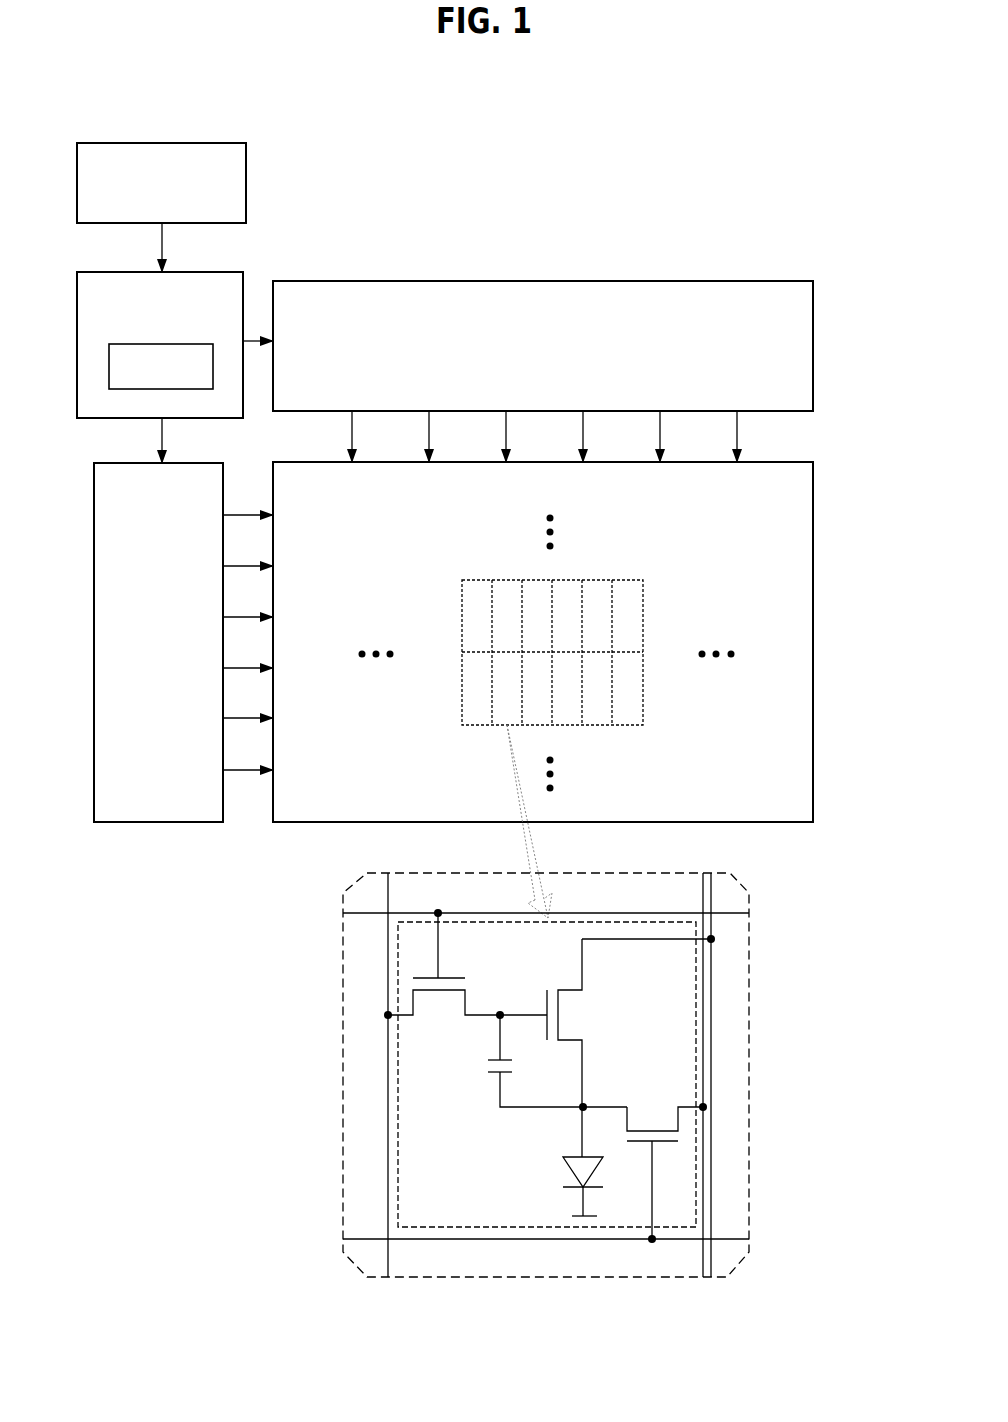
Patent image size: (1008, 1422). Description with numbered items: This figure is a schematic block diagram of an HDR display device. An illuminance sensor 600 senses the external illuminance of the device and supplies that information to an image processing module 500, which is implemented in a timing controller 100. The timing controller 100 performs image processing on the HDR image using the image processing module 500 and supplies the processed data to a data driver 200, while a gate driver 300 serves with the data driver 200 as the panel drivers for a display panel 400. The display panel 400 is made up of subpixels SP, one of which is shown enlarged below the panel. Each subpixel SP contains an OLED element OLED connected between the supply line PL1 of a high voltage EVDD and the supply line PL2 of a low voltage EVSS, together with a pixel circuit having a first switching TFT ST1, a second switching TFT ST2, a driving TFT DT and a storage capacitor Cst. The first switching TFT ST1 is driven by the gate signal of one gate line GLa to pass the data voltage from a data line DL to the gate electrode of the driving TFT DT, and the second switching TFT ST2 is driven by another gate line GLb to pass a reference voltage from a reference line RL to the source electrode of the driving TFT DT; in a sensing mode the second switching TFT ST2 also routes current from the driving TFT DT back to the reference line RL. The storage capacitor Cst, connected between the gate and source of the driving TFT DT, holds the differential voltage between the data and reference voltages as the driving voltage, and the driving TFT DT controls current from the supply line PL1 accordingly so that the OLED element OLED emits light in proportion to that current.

The illuminance sensor 600 is at (207, 143).
The timing controller 100 is at (203, 272).
The image processing module 500 is at (161, 366).
The data driver 200 is at (790, 281).
The gate driver 300 is at (197, 463).
The display panel 400 is at (790, 462).
The subpixel SP is at (552, 652).
The data line DL is at (403, 1075).
The reference line RL is at (689, 1075).
The supply line of the high voltage PL1 is at (726, 1075).
The supply line of the low voltage PL2 is at (583, 1208).
The gate line GLa is at (546, 922).
The gate line GLb is at (546, 1229).
The first switching TFT ST1 is at (467, 965).
The second switching TFT ST2 is at (665, 1172).
The driving TFT DT is at (568, 1048).
The storage capacitor Cst is at (542, 1061).
The OLED element OLED is at (560, 1186).
The high voltage EVDD is at (646, 951).
The low voltage EVSS is at (558, 1215).